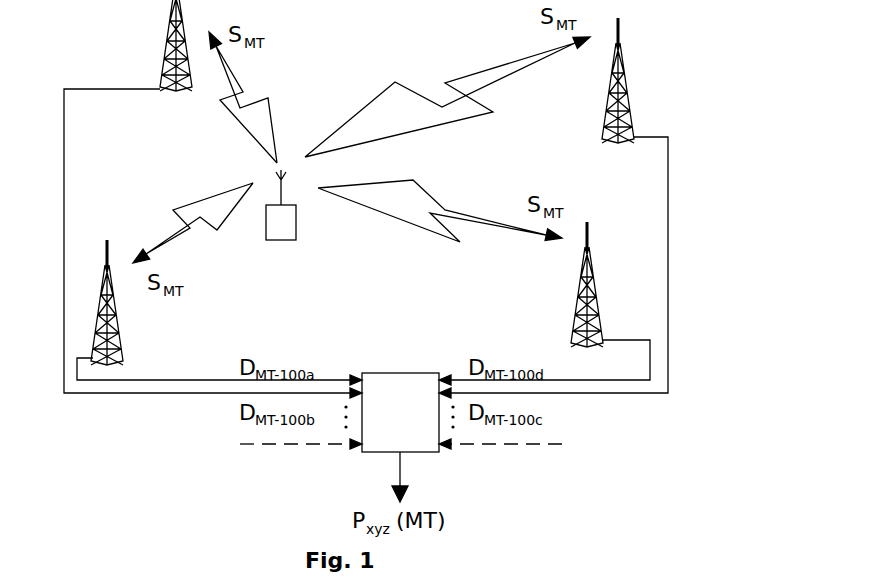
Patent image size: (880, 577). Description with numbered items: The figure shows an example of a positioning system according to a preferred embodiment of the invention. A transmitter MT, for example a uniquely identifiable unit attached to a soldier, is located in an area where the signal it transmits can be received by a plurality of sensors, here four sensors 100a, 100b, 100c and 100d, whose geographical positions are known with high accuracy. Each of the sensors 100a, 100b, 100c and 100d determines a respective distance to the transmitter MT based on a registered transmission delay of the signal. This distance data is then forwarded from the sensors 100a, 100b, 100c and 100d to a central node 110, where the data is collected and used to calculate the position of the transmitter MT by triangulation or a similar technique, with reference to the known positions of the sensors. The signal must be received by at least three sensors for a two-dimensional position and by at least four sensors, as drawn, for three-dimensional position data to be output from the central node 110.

The sensor 100a is at (158, 302).
The sensor 100b is at (121, 45).
The sensor 100c is at (667, 80).
The sensor 100d is at (520, 284).
The central node 110 is at (391, 386).
The transmitter MT is at (303, 233).